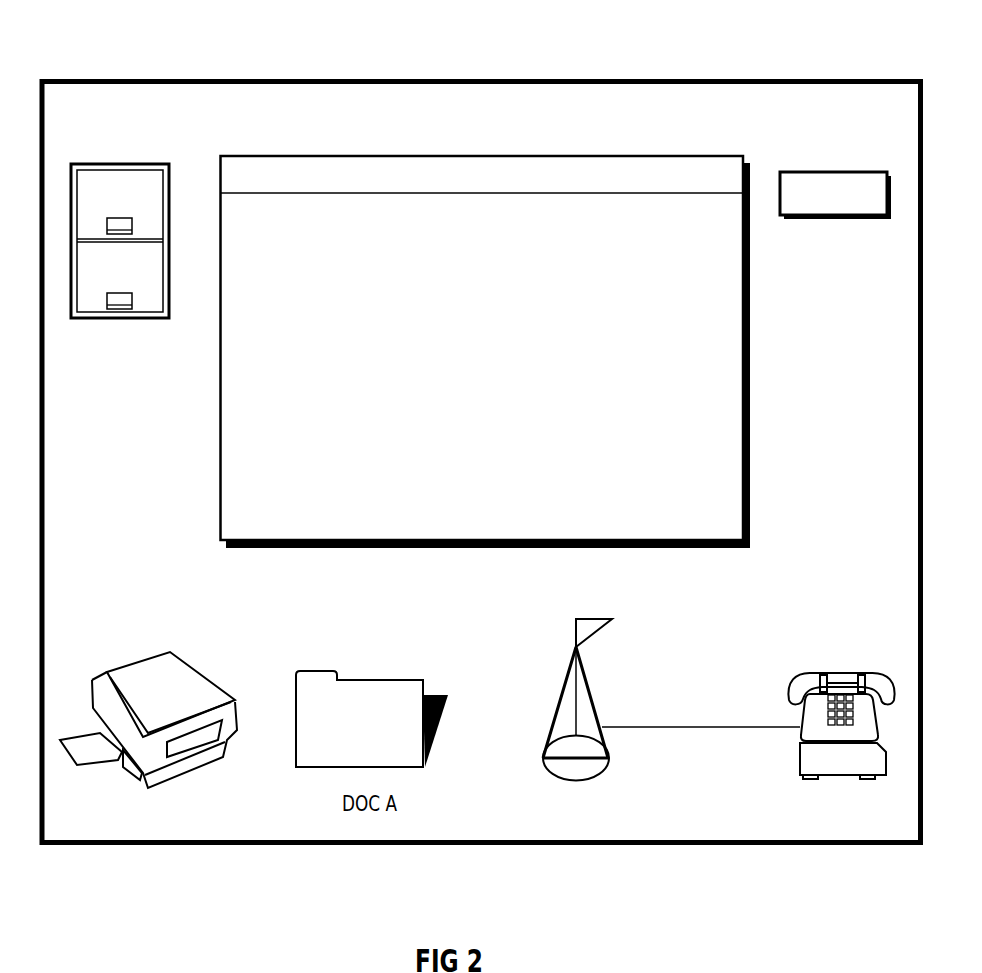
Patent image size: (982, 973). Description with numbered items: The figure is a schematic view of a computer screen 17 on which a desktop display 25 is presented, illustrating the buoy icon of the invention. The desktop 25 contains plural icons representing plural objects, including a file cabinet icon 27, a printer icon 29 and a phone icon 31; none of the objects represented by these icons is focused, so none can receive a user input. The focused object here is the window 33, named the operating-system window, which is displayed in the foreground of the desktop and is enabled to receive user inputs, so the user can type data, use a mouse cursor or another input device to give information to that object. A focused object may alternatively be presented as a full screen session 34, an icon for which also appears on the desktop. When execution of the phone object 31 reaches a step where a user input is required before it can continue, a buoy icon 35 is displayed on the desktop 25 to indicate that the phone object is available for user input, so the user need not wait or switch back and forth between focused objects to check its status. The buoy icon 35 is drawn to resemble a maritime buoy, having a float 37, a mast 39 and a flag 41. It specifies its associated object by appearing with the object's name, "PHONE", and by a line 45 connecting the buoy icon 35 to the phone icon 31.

The screen 17 is at (243, 80).
The desktop display 25 is at (444, 125).
The file cabinet icon 27 is at (113, 164).
The printer icon 29 is at (180, 657).
The phone icon 31 is at (797, 773).
The window 33 is at (603, 155).
The full screen session 34 is at (843, 172).
The buoy icon 35 is at (603, 697).
The float 37 is at (595, 759).
The mast 39 is at (574, 692).
The flag 41 is at (592, 619).
The line 45 is at (685, 727).